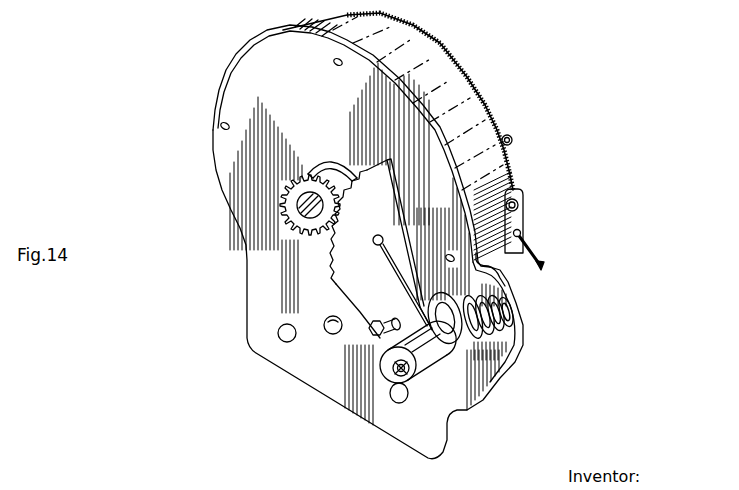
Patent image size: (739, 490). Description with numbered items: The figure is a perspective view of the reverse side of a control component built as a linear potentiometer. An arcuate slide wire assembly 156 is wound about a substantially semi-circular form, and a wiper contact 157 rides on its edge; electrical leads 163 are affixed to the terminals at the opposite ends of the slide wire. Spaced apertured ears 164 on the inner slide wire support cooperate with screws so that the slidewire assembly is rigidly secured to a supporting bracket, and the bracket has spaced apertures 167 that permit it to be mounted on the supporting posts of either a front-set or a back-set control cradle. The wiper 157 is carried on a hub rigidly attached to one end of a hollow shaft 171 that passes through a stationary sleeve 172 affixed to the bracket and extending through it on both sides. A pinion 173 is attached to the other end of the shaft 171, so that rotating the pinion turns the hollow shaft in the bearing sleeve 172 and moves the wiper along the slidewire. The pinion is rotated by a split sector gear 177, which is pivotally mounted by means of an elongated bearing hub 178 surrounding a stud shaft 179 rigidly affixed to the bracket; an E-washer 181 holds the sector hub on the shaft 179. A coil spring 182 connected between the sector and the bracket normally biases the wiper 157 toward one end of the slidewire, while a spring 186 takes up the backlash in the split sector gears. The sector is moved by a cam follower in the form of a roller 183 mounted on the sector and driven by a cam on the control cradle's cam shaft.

The arcuate slide wire assembly 156 is at (431, 40).
The wiper contact 157 is at (511, 138).
The electrical leads 163 is at (541, 263).
The apertured ears 164 is at (333, 61).
The spaced apertures 167 is at (392, 396).
The hollow shaft 171 is at (330, 170).
The stationary sleeve 172 is at (355, 163).
The pinion 173 is at (293, 226).
The split sector gear 177 is at (347, 267).
The elongated bearing hub 178 is at (435, 378).
The stud shaft 179 is at (400, 402).
The E-washer 181 is at (411, 378).
The coil spring 182 is at (509, 317).
The roller 183 is at (369, 333).
The spring 186 is at (413, 287).